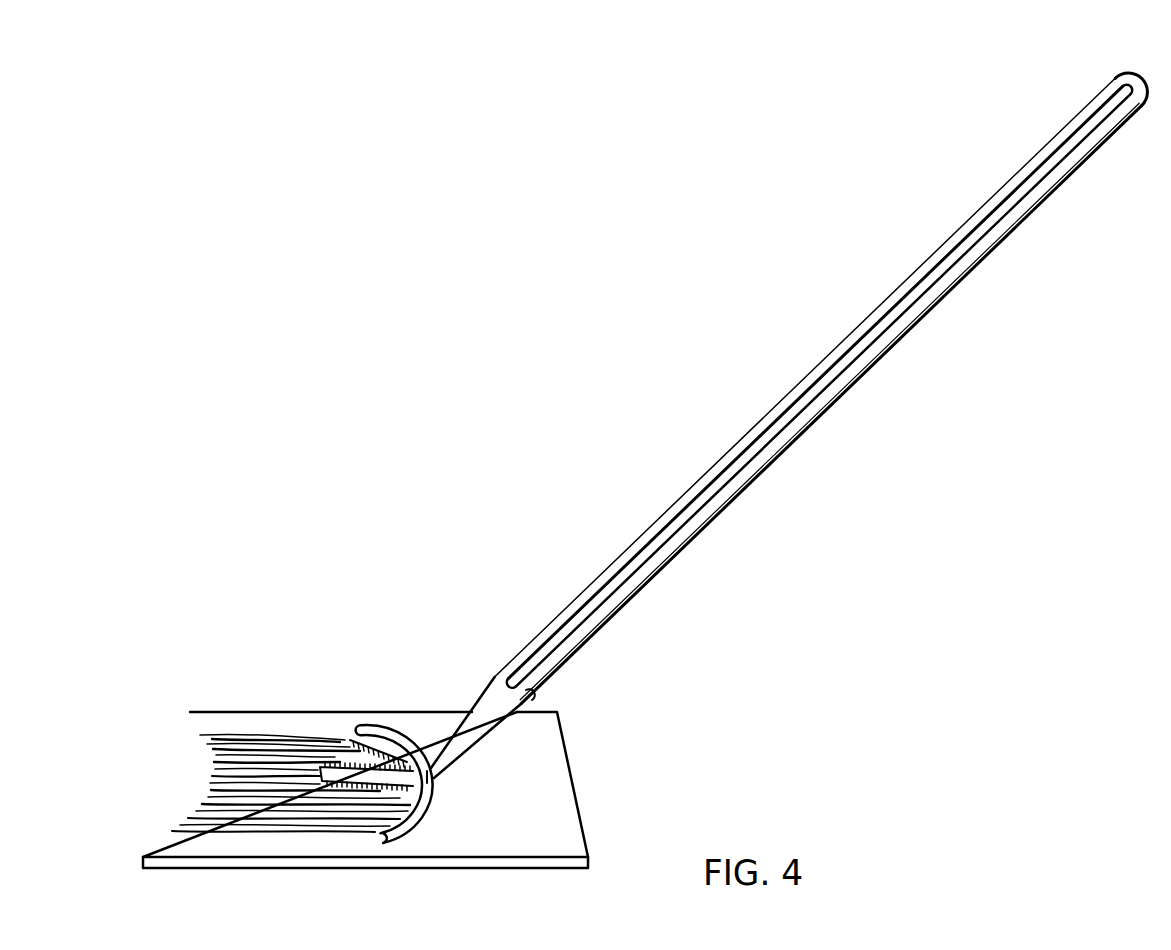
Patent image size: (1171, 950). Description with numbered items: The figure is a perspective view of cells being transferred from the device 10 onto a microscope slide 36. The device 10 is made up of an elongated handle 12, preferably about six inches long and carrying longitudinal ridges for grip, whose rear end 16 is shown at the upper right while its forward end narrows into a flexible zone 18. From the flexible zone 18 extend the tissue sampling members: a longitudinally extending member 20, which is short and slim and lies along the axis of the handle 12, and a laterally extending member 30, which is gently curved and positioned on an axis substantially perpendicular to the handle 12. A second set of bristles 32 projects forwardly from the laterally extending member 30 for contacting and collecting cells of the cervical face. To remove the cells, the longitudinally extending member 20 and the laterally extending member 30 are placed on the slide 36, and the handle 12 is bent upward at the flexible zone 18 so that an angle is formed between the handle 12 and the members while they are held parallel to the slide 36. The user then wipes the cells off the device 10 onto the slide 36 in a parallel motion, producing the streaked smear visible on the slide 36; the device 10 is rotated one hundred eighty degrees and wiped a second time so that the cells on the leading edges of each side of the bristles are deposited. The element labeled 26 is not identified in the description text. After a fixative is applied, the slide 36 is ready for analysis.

The device 10 is at (675, 453).
The elongated handle 12 is at (652, 547).
The rear end 16 is at (1107, 102).
The flexible zone 18 is at (456, 740).
The longitudinally extending member 20 is at (343, 745).
The specimen smear 26 is at (327, 782).
The laterally extending member 30 is at (378, 737).
The second set of bristles 32 is at (343, 780).
The microscope slide 36 is at (192, 778).